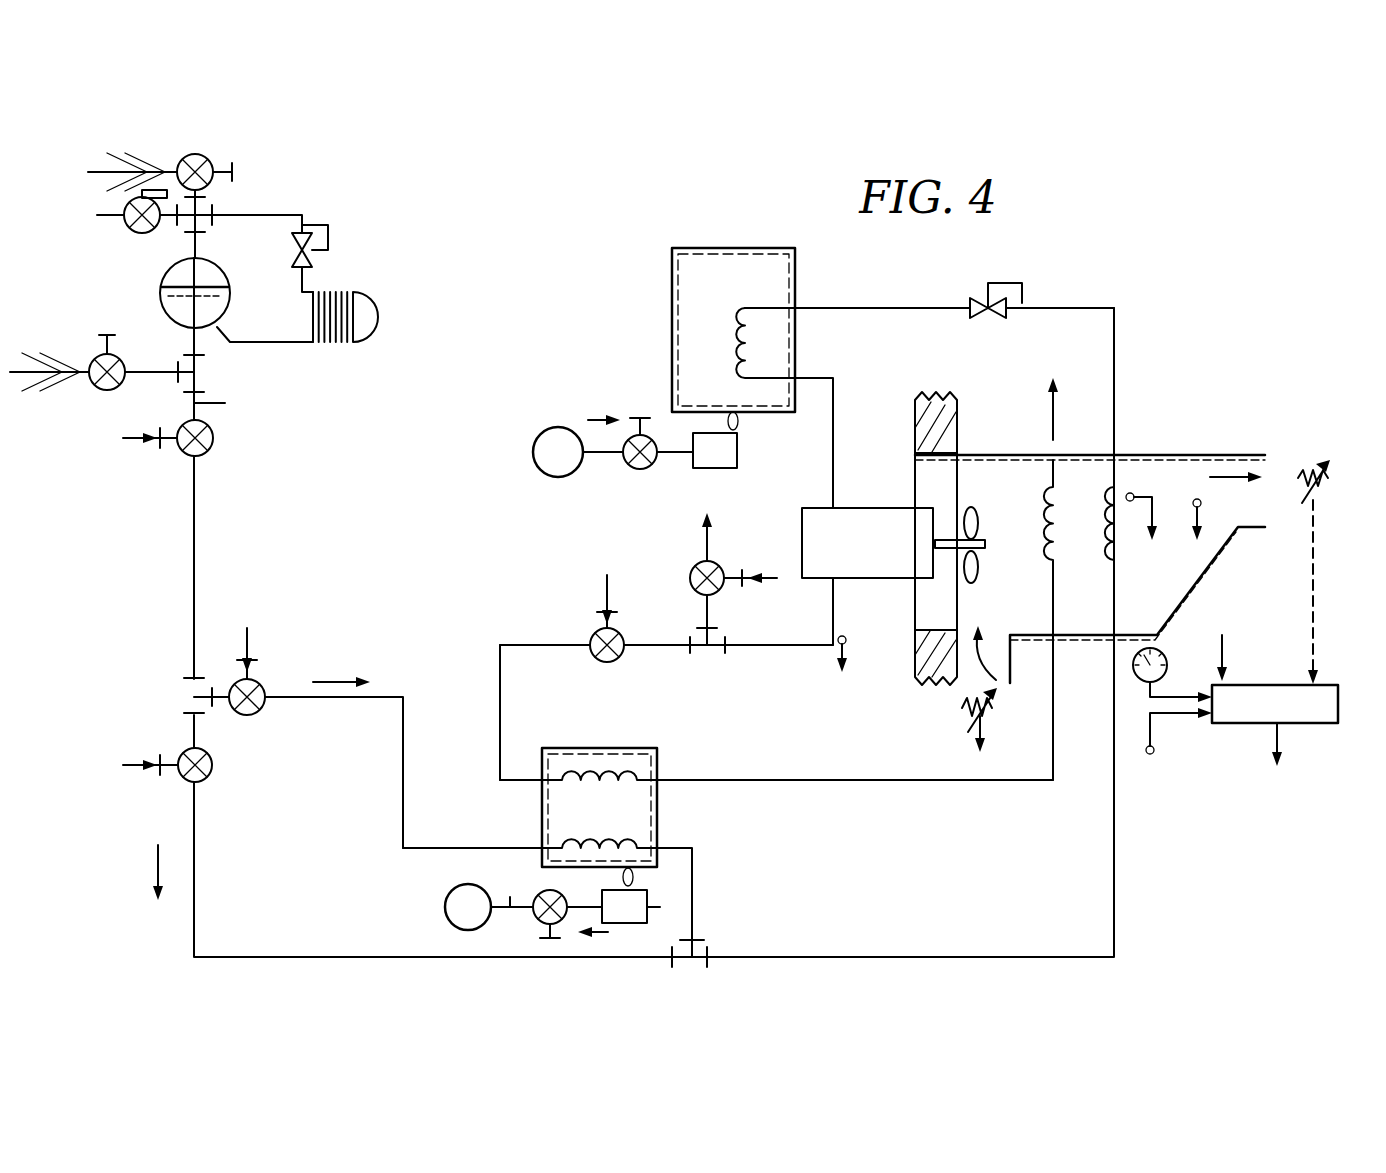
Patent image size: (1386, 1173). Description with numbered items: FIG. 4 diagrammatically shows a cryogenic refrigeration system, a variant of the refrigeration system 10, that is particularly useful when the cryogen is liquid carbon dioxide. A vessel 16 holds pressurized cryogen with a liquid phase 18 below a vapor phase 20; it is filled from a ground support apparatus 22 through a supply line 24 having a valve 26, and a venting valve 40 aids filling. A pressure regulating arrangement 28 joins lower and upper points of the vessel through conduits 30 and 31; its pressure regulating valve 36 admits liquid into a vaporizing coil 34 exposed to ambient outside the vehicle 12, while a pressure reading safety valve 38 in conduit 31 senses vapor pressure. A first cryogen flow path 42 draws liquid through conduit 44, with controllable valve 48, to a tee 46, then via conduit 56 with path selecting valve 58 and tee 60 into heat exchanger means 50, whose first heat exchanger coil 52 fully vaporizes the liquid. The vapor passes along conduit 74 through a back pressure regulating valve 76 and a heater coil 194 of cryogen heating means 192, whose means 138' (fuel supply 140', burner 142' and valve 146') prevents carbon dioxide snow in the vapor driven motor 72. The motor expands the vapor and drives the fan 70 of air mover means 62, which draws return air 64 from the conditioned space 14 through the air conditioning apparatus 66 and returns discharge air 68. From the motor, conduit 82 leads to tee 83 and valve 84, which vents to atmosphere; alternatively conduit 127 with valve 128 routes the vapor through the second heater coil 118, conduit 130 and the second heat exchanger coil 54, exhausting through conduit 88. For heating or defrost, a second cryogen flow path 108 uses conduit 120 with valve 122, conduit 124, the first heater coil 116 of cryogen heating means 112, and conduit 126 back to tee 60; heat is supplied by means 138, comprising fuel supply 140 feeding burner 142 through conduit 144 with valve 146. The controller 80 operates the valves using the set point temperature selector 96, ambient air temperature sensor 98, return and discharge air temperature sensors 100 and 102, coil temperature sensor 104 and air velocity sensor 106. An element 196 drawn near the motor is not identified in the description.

The refrigeration system 10 is at (409, 259).
The vehicle 12 is at (916, 426).
The conditioned space 14 is at (1272, 541).
The vessel 16 is at (232, 316).
The liquid phase 18 is at (166, 322).
The vapor phase 20 is at (218, 268).
The ground support apparatus 22 is at (30, 388).
The supply line 24 is at (146, 378).
The valve 26 is at (106, 354).
The pressure regulating arrangement 28 is at (323, 282).
The conduit 30 is at (236, 337).
The conduit 31 is at (248, 215).
The vaporizing coil 34 is at (357, 341).
The pressure regulating valve 36 is at (292, 258).
The pressure reading safety valve 38 is at (130, 230).
The venting valve 40 is at (208, 160).
The first cryogen fluid flow path 42 is at (158, 876).
The conduit 44 is at (228, 406).
The tee 46 is at (185, 700).
The controllable valve 48 is at (178, 451).
The heat exchanger means 50 is at (1112, 566).
The first heat exchanger coil 52 is at (1120, 556).
The second heat exchanger coil 54 is at (1048, 530).
The conduit 56 is at (190, 806).
The controllable path selecting valve 58 is at (213, 765).
The tee 60 is at (692, 962).
The air mover means 62 is at (859, 617).
The return air 64 is at (1012, 650).
The air conditioning apparatus 66 is at (1216, 455).
The discharge air 68 is at (1265, 470).
The fan 70 is at (980, 515).
The vapor driven motor 72 is at (800, 530).
The conduit 74 is at (920, 308).
The back pressure regulating valve 76 is at (992, 318).
The controller 80 is at (1308, 725).
The conduit 82 is at (950, 782).
The tee 83 is at (720, 650).
The controllable path selector valve 84 is at (690, 581).
The conduit 88 is at (1058, 470).
The set point temperature selector 96 is at (1165, 656).
The ambient air temperature sensor 98 is at (1154, 750).
The return air temperature sensor 100 is at (967, 716).
The discharge air temperature sensor 102 is at (1326, 480).
The temperature sensor 104 is at (1134, 496).
The air velocity sensor 106 is at (1201, 503).
The second cryogen flow path 108 is at (365, 681).
The cryogen heating means 112 is at (672, 746).
The first heater coil 116 is at (607, 837).
The second heater coil 118 is at (618, 781).
The conduit 120 is at (350, 700).
The controllable path selecting valve 122 is at (262, 680).
The conduit 124 is at (401, 800).
The conduit 126 is at (692, 848).
The conduit 127 is at (500, 640).
The controllable path selecting valve 128 is at (595, 633).
The conduit 130 is at (818, 780).
The means for adding heat 138 is at (498, 938).
The means for adding heat 138' is at (562, 383).
The fuel supply 140 is at (442, 905).
The fuel supply 140' is at (554, 450).
The burner 142 is at (666, 896).
The burner 142' is at (760, 440).
The conduit 144 is at (512, 886).
The controllable valve 146 is at (565, 942).
The valve 146' is at (640, 480).
The cryogen heating means 192 is at (672, 256).
The heater coil 194 is at (730, 332).
The drain 196 is at (846, 640).